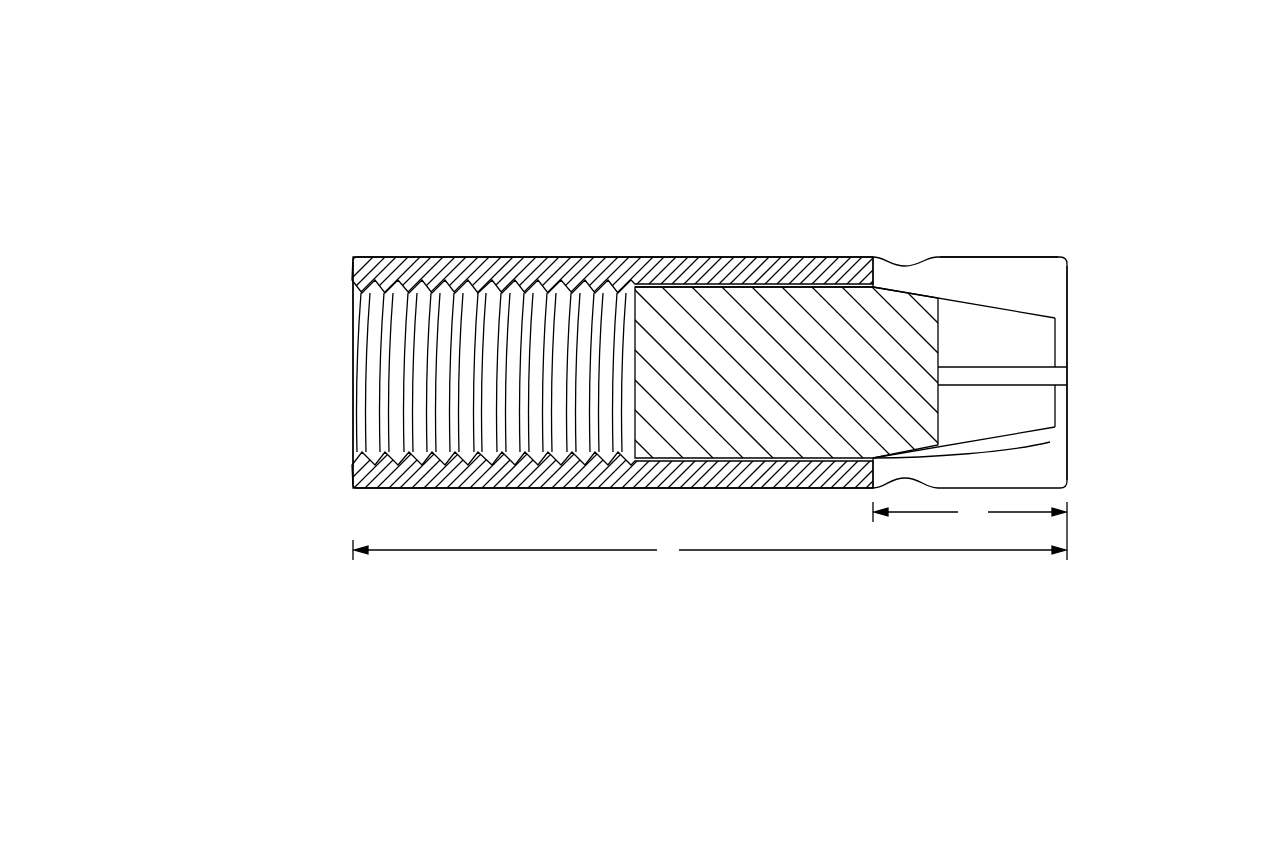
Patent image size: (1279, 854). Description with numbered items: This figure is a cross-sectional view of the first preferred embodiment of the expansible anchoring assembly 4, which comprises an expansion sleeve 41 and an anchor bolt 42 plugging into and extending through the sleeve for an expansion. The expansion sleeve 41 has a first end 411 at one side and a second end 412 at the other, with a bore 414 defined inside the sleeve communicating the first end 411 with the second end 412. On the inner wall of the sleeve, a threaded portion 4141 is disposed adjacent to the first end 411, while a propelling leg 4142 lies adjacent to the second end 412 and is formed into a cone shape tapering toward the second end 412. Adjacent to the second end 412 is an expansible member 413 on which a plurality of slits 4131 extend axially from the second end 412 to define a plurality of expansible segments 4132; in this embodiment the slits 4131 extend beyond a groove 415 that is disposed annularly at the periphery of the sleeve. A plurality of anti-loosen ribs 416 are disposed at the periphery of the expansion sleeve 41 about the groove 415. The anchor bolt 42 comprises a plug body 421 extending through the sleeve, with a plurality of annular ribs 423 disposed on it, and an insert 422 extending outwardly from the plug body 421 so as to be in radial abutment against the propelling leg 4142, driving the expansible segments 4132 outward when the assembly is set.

The expansible anchoring assembly 4 is at (188, 210).
The expansion sleeve 41 is at (547, 242).
The first end 411 is at (352, 328).
The second end 412 is at (1067, 457).
The expansible member 413 is at (1006, 238).
The slits 4131 is at (1050, 372).
The expansible segments 4132 is at (1035, 280).
The bore 414 is at (351, 409).
The threaded portion 4141 is at (403, 312).
The propelling leg 4142 is at (958, 322).
The groove 415 is at (902, 267).
The anti-loosen ribs 416 is at (470, 257).
The anchor bolt 42 is at (664, 295).
The plug body 421 is at (718, 305).
The annular ribs 423 is at (795, 285).
The insert 422 is at (1050, 442).